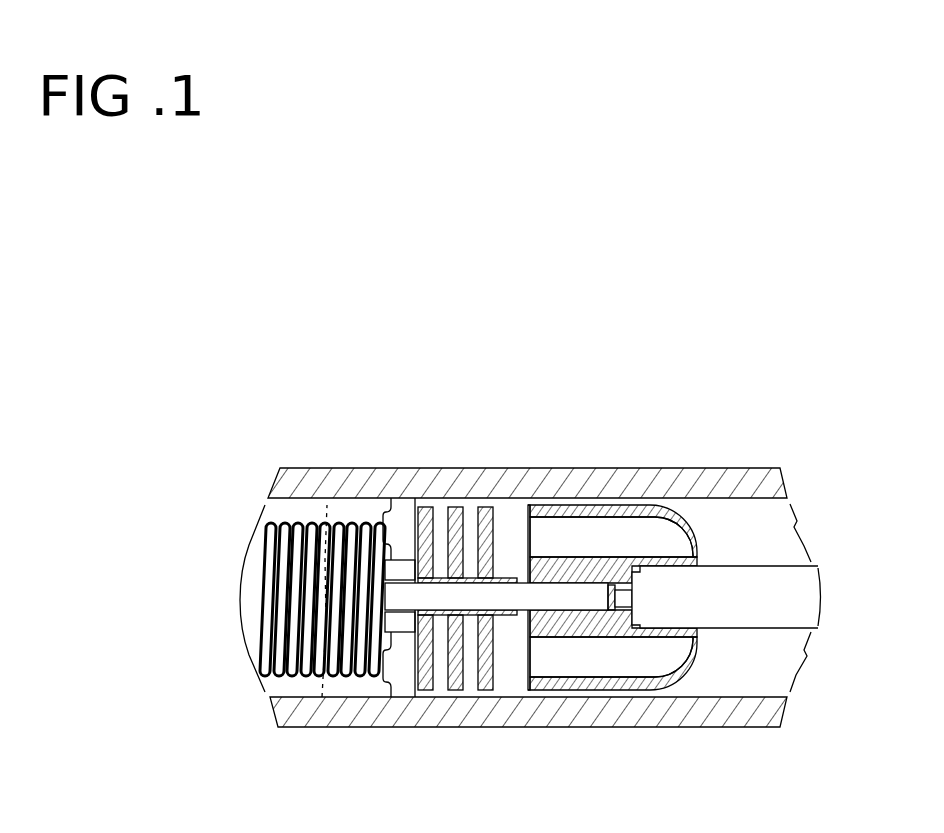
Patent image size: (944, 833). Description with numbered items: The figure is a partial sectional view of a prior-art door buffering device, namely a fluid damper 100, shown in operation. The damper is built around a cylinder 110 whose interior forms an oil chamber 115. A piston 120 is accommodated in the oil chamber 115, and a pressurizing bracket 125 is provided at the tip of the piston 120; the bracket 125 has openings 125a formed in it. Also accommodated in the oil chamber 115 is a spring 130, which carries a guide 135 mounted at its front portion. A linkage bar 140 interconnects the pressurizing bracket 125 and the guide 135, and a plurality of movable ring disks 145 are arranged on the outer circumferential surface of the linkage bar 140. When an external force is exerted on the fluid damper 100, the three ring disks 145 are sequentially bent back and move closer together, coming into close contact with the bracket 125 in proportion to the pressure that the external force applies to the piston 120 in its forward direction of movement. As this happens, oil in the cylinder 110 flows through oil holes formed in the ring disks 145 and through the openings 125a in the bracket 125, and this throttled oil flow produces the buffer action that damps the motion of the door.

The fluid damper 100 is at (738, 432).
The cylinder 110 is at (271, 462).
The oil chamber 115 is at (322, 699).
The piston 120 is at (745, 632).
The pressurizing bracket 125 is at (651, 683).
The openings 125a is at (612, 652).
The spring 130 is at (238, 600).
The guide 135 is at (401, 505).
The linkage bar 140 is at (553, 614).
The movable ring disks 145 is at (425, 507).